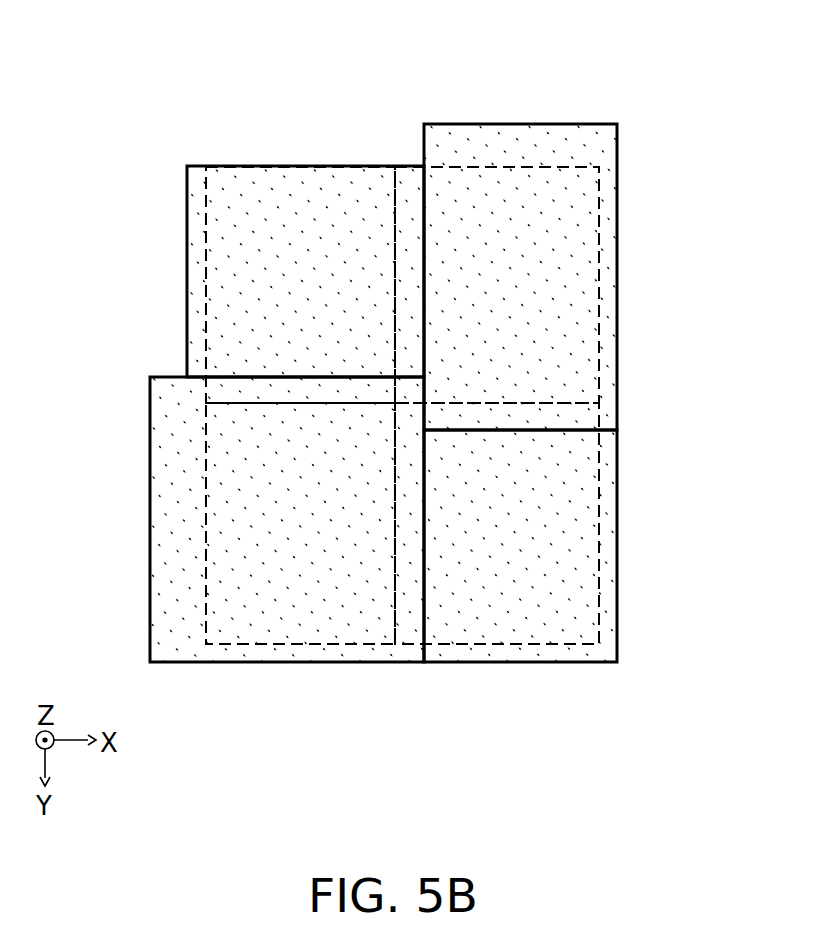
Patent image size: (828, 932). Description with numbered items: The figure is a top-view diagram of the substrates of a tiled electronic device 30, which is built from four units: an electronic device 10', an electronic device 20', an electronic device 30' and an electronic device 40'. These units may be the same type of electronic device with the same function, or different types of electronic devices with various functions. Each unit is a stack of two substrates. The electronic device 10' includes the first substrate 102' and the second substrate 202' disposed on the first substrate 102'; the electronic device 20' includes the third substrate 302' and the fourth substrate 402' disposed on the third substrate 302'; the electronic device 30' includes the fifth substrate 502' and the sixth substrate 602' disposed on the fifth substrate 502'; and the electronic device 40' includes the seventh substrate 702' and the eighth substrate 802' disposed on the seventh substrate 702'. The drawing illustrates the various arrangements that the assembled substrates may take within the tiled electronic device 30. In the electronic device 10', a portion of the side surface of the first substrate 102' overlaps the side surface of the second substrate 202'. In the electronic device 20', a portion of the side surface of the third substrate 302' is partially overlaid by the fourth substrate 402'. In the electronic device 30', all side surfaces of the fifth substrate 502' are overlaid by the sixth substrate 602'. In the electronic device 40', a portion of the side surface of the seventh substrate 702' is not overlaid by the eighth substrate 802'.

The tiled electronic device 30 is at (378, 336).
The electronic device 10' is at (306, 273).
The electronic device 20' is at (500, 273).
The electronic device 30' is at (307, 525).
The electronic device 40' is at (500, 525).
The first substrate 102' is at (244, 285).
The second substrate 202' is at (258, 271).
The third substrate 302' is at (552, 285).
The fourth substrate 402' is at (567, 277).
The fifth substrate 502' is at (228, 523).
The sixth substrate 602' is at (243, 519).
The seventh substrate 702' is at (552, 523).
The eighth substrate 802' is at (567, 546).